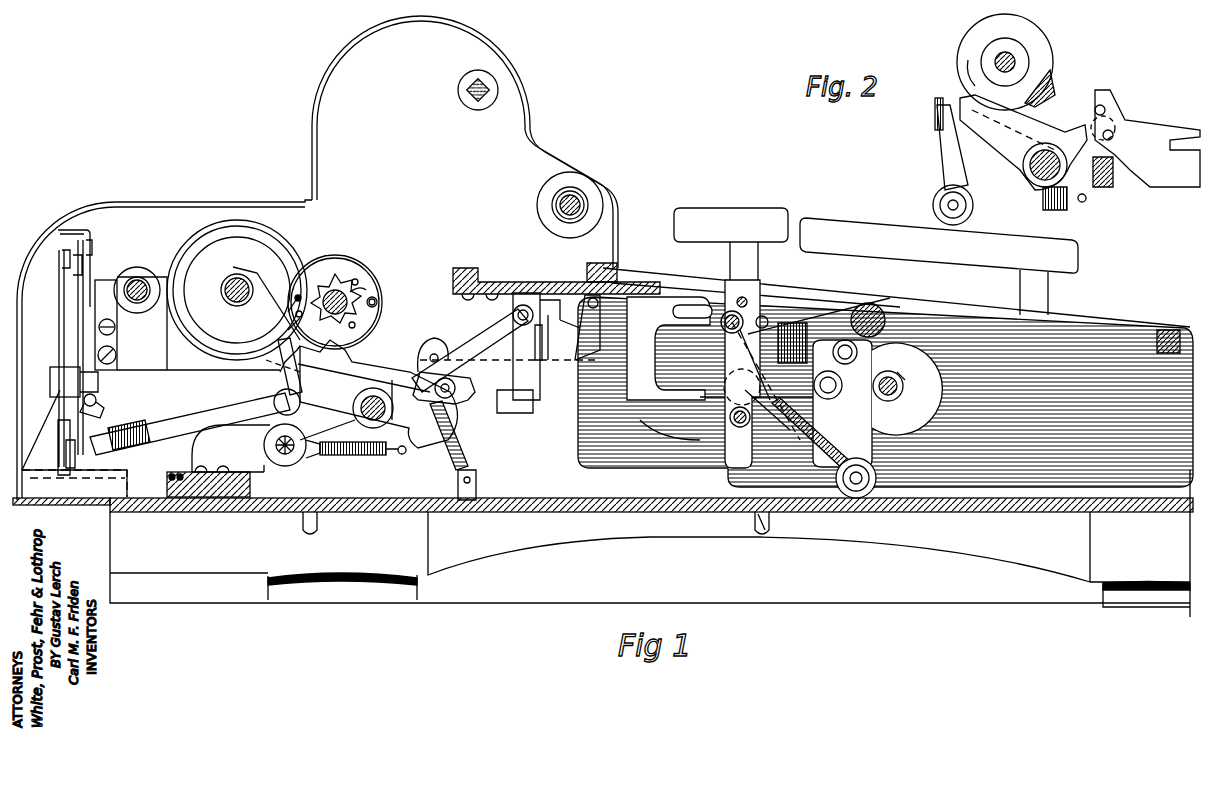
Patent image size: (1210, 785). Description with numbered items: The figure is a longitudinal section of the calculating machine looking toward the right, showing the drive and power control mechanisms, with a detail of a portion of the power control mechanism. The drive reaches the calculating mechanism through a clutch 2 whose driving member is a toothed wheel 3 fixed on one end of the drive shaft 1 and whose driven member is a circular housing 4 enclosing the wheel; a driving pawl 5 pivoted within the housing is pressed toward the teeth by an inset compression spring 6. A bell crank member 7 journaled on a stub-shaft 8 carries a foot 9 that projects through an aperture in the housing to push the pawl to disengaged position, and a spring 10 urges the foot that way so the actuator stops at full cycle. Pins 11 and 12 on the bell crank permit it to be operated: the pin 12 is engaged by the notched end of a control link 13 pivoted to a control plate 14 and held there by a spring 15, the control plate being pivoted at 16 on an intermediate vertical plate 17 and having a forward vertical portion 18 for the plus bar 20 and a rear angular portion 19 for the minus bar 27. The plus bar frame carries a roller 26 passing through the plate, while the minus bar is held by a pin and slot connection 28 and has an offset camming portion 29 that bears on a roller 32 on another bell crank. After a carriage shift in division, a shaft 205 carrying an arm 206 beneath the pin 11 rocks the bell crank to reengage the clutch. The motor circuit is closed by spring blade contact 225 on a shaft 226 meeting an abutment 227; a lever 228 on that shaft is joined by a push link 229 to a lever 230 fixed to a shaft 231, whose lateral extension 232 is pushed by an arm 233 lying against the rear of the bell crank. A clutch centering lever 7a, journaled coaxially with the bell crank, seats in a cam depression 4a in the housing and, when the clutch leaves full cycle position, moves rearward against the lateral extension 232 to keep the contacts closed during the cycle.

In FIG. 1, the drive shaft 1 is at (325, 262).
In FIG. 1, the clutch 2 is at (337, 262).
In FIG. 1, the toothed wheel 3 is at (350, 272).
In FIG. 1, the circular housing 4 is at (348, 284).
In FIG. 1, the driving pawl 5 is at (362, 292).
In FIG. 1, the inset compression spring 6 is at (380, 300).
In FIG. 1, the bell crank member 7 is at (344, 351).
In FIG. 1, the clutch centering lever 7a is at (360, 384).
In FIG. 2, the clutch centering lever 7a is at (1018, 140).
In FIG. 1, the stub-shaft 8 is at (354, 412).
In FIG. 1, the foot 9 is at (292, 316).
In FIG. 1, the spring 10 is at (464, 452).
In FIG. 1, the pin 11 is at (430, 356).
In FIG. 1, the pin 12 is at (448, 396).
In FIG. 1, the control link 13 is at (686, 403).
In FIG. 1, the control plate 14 is at (850, 434).
In FIG. 1, the spring 15 is at (818, 455).
In FIG. 1, the pivot 16 is at (868, 470).
In FIG. 1, the intermediate vertical plate 17 is at (1093, 435).
In FIG. 1, the forward vertical portion 18 is at (862, 414).
In FIG. 1, the rear angular portion 19 is at (793, 447).
In FIG. 1, the plus bar 20 is at (952, 260).
In FIG. 1, the roller 26 is at (898, 380).
In FIG. 1, the minus bar 27 is at (733, 237).
In FIG. 1, the pin and slot connection 28 is at (728, 374).
In FIG. 1, the offset camming portion 29 is at (750, 302).
In FIG. 1, the roller 32 is at (726, 312).
In FIG. 1, the shaft 205 is at (514, 318).
In FIG. 1, the arm 206 is at (480, 338).
In FIG. 1, the spring blade contact 225 is at (62, 300).
In FIG. 1, the shaft 226 is at (100, 386).
In FIG. 1, the abutment 227 is at (92, 239).
In FIG. 1, the lever 228 is at (106, 408).
In FIG. 1, the push link 229 is at (202, 431).
In FIG. 1, the lever 230 is at (274, 388).
In FIG. 1, the shaft 231 is at (288, 462).
In FIG. 1, the lateral extension 232 is at (278, 352).
In FIG. 2, the lateral extension 232 is at (940, 106).
In FIG. 1, the arm 233 is at (264, 370).
In FIG. 2, the arm 233 is at (945, 165).
In FIG. 2, the cam depression 4a is at (1050, 95).